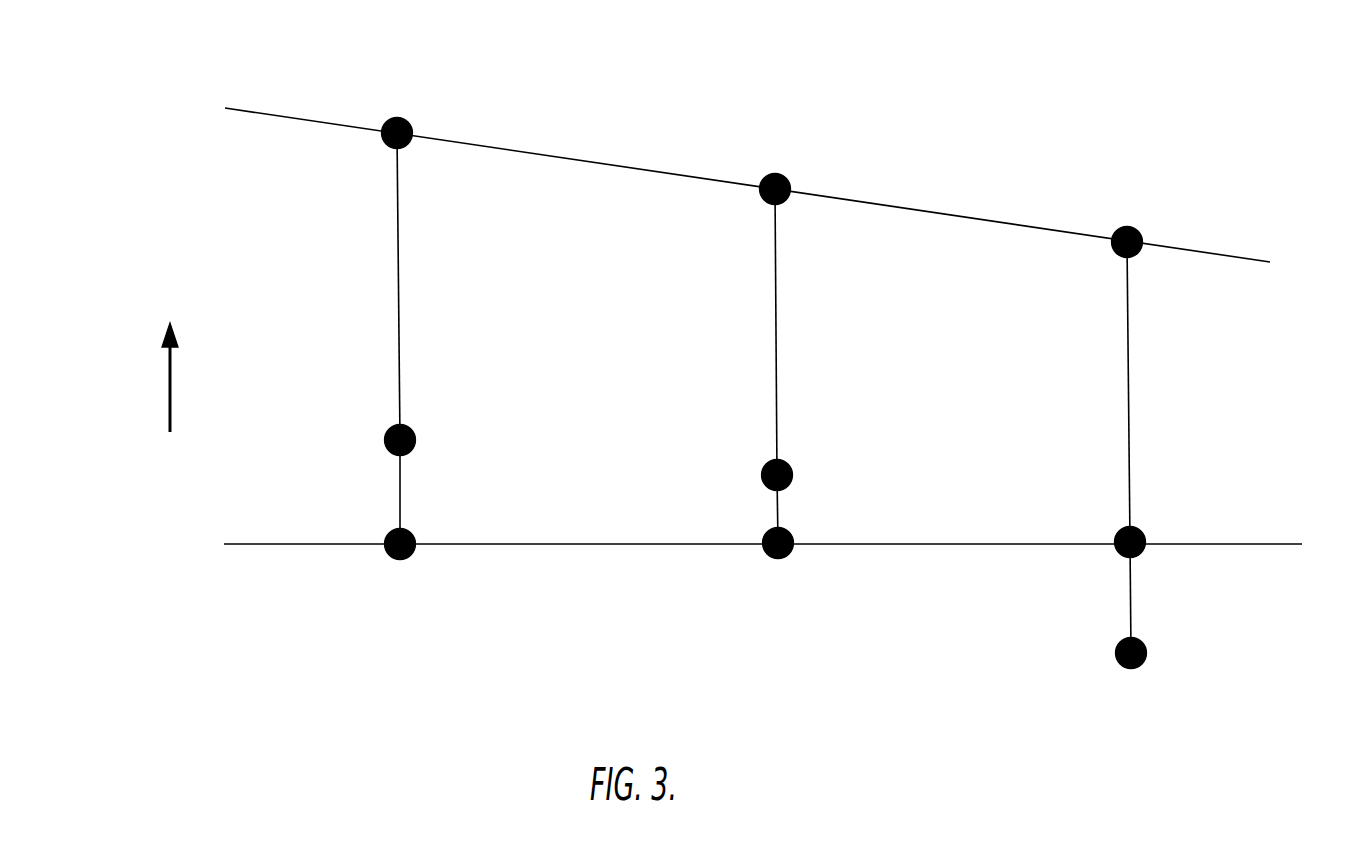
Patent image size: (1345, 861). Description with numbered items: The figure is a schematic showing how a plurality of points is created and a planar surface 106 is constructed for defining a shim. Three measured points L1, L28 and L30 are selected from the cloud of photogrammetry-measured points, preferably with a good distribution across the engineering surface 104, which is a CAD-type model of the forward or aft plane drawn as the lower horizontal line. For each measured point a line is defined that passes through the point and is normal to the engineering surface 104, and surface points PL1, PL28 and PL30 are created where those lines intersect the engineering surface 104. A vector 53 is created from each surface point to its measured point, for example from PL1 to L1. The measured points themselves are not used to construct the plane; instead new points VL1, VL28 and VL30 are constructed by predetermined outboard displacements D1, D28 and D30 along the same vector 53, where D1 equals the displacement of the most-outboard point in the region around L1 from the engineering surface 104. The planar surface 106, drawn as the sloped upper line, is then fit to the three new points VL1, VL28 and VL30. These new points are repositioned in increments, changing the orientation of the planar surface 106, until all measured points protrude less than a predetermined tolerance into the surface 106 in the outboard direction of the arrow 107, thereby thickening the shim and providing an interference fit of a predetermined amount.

The planar surface 106 is at (665, 172).
The engineering surface 104 is at (610, 545).
The arrow 107 is at (168, 365).
The vector 53 is at (400, 485).
The first new point VL1 is at (412, 122).
The new point VL28 is at (783, 177).
The new point VL30 is at (1142, 230).
The distance D1 is at (398, 303).
The displacement D28 is at (776, 343).
The displacement D30 is at (1128, 382).
The measured point L1 is at (415, 432).
The measured point L28 is at (792, 467).
The measured point L30 is at (1147, 650).
The surface point PL1 is at (417, 533).
The surface point PL28 is at (785, 557).
The surface point PL30 is at (1143, 530).